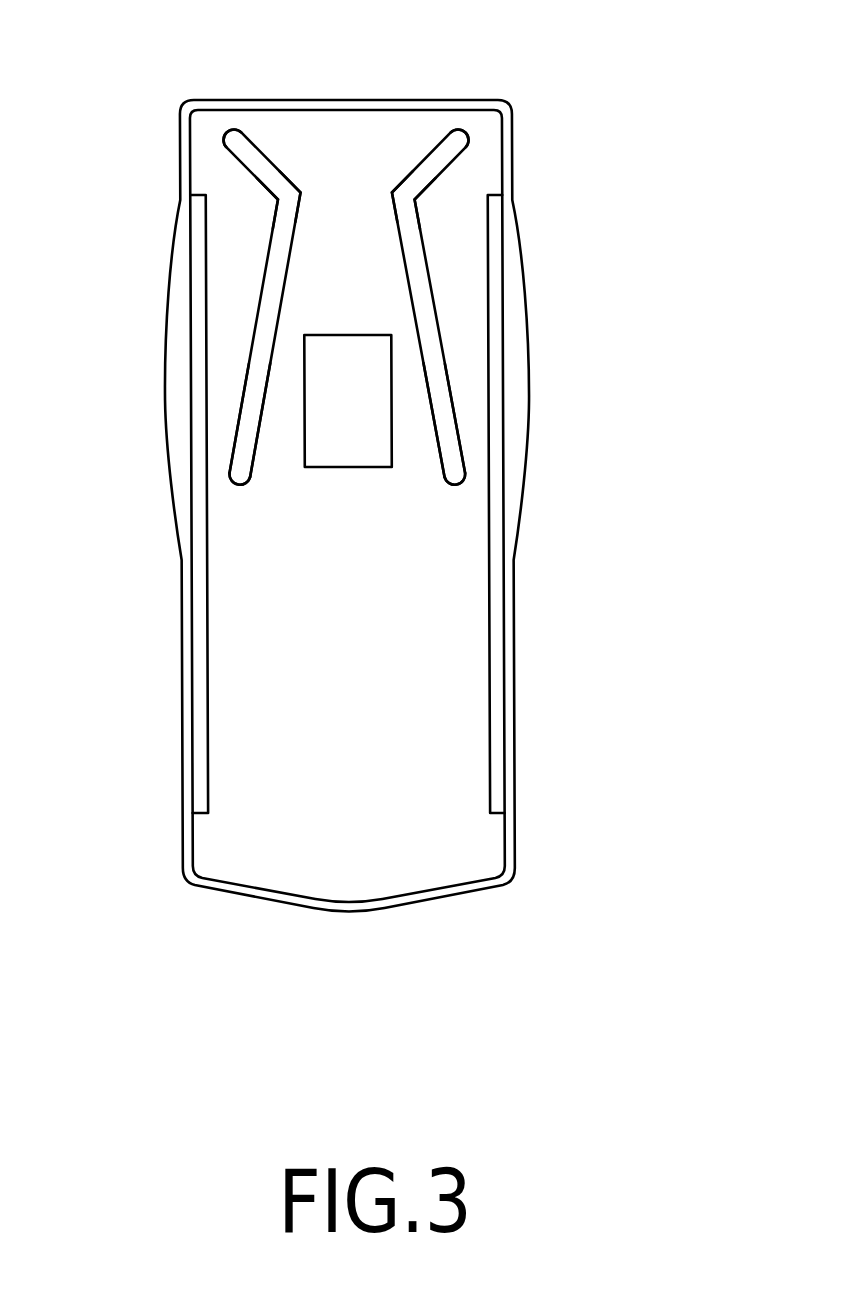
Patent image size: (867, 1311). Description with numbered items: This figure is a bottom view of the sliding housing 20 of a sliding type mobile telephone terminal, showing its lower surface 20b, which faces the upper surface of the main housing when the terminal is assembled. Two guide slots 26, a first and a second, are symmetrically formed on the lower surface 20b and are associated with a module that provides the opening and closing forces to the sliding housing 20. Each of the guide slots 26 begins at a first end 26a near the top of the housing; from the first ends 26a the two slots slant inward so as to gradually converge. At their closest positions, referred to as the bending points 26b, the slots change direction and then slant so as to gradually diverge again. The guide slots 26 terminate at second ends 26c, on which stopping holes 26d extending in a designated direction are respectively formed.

The sliding housing 20 is at (530, 369).
The lower surface 20b is at (437, 722).
The guide slots 26 is at (248, 314).
The first ends 26a is at (228, 133).
The bending points 26b is at (296, 199).
The second ends 26c is at (236, 443).
The stopping holes 26d is at (230, 477).